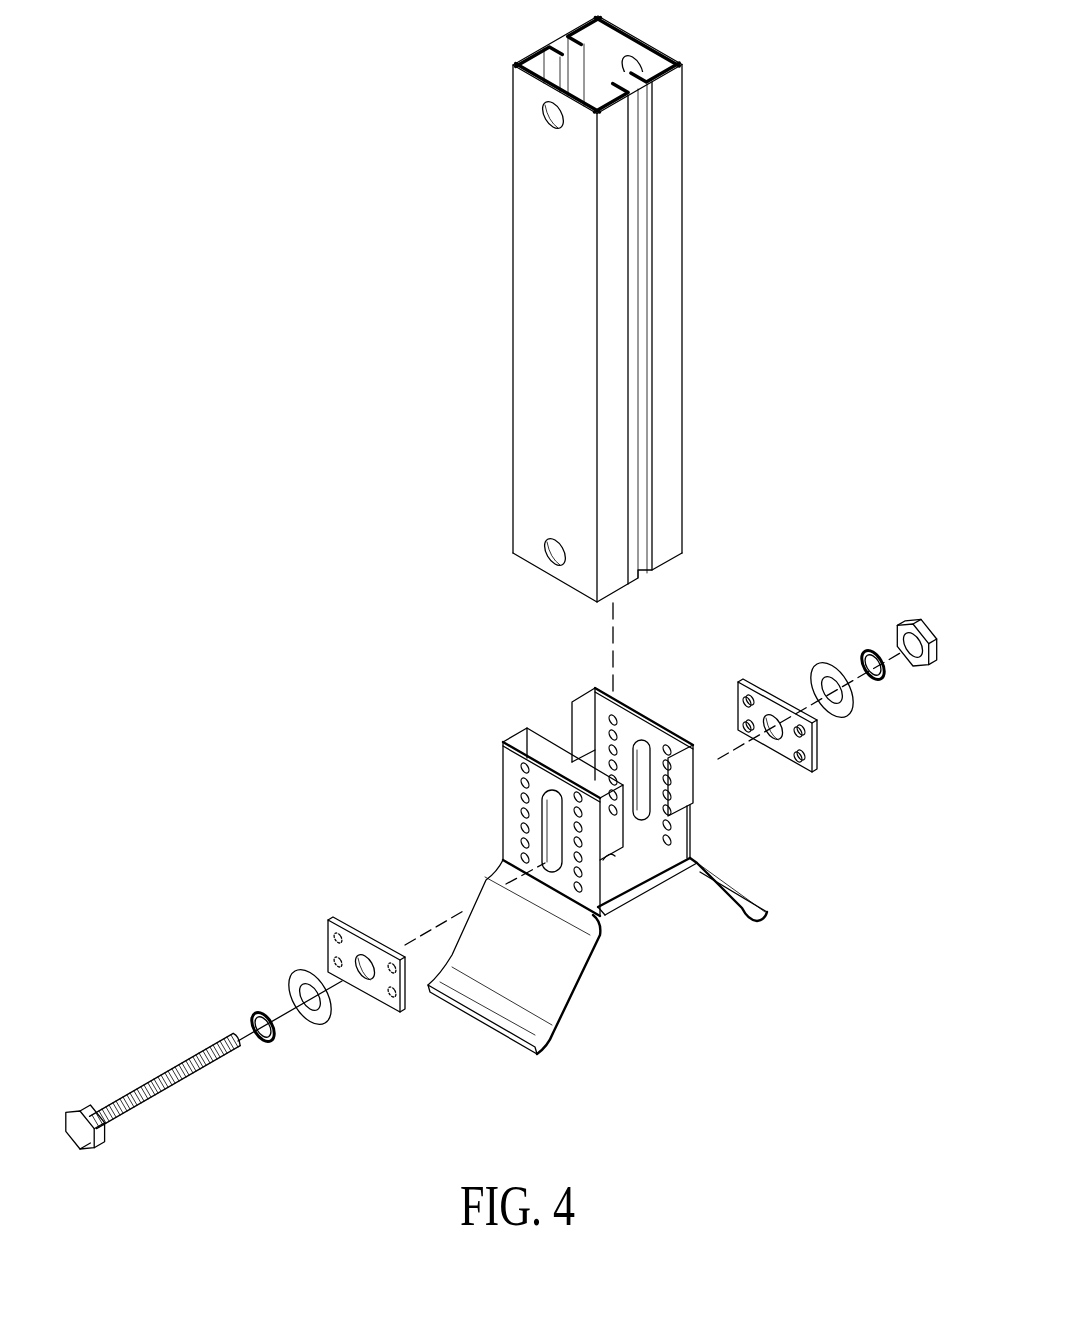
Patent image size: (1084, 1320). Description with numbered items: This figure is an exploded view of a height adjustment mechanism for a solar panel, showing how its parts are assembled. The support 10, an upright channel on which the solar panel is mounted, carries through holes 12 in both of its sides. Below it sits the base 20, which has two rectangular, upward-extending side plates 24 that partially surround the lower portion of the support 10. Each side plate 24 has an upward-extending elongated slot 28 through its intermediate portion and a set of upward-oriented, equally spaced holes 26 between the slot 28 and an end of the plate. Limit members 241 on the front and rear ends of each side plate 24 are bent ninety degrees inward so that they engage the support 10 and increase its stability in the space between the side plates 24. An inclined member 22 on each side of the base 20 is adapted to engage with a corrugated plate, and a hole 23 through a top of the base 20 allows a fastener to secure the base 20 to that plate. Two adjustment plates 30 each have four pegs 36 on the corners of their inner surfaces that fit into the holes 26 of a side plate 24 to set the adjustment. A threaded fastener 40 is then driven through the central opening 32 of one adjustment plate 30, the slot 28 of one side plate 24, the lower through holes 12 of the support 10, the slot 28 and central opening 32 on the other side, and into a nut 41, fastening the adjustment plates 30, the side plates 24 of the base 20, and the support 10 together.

The support 10 is at (724, 197).
The through hole 12 is at (553, 548).
The base 20 is at (605, 882).
The inclined member 22 is at (548, 987).
The hole 23 is at (628, 825).
The side plate 24 is at (513, 767).
The limit member 241 is at (683, 788).
The hole 26 is at (578, 888).
The elongated slot 28 is at (550, 807).
The adjustment plate 30 is at (577, 818).
The central opening 32 is at (813, 754).
The peg 36 is at (740, 700).
The threaded fastener 40 is at (186, 1119).
The nut 41 is at (910, 626).